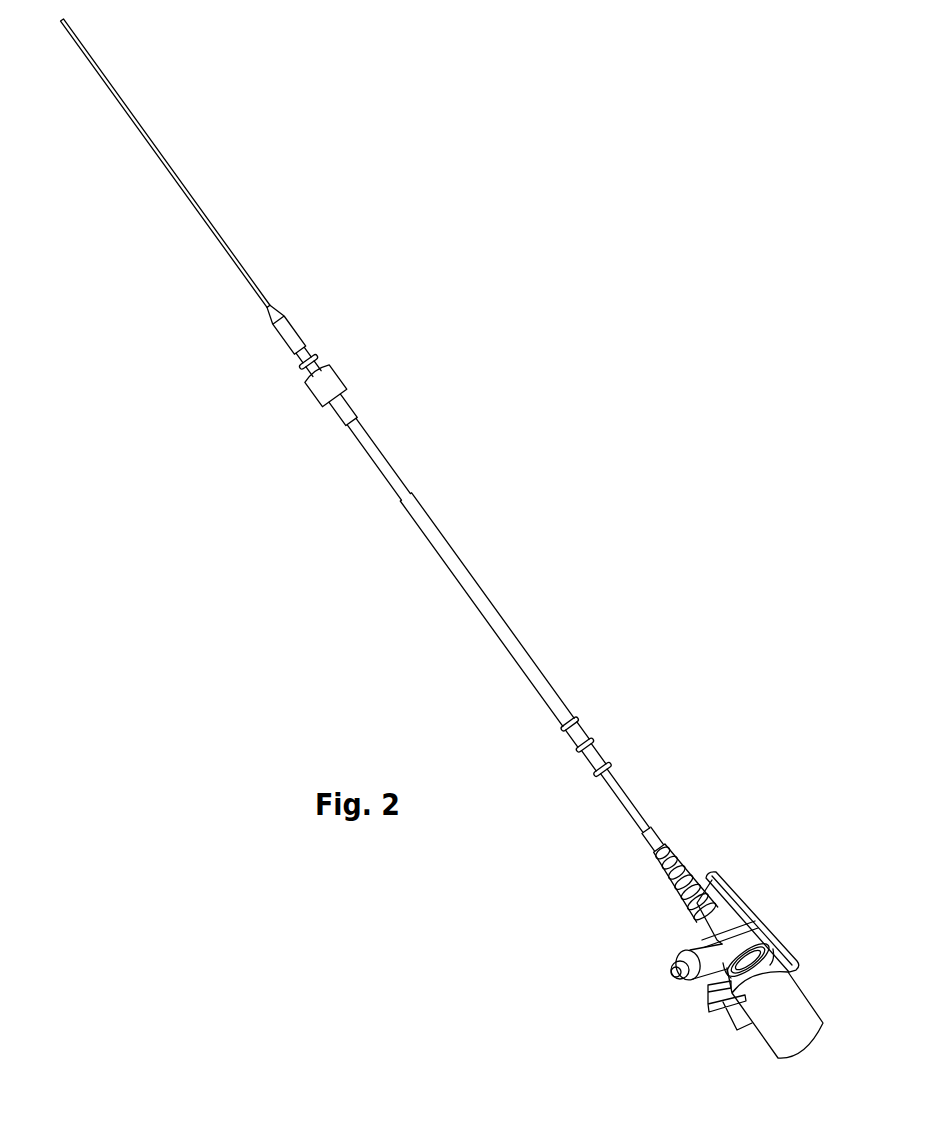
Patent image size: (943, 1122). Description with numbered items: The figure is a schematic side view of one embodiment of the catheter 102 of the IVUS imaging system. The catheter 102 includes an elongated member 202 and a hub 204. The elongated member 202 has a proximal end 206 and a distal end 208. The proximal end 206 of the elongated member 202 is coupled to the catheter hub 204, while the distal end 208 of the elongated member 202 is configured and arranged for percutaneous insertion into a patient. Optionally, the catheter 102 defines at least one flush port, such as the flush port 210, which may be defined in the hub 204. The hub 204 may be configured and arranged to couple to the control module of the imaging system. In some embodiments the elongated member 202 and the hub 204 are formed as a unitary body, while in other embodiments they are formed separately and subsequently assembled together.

The catheter 102 is at (500, 272).
The elongated member 202 is at (197, 497).
The hub 204 is at (805, 828).
The proximal end 206 is at (576, 877).
The distal end 208 is at (49, 82).
The flush port 210 is at (685, 984).